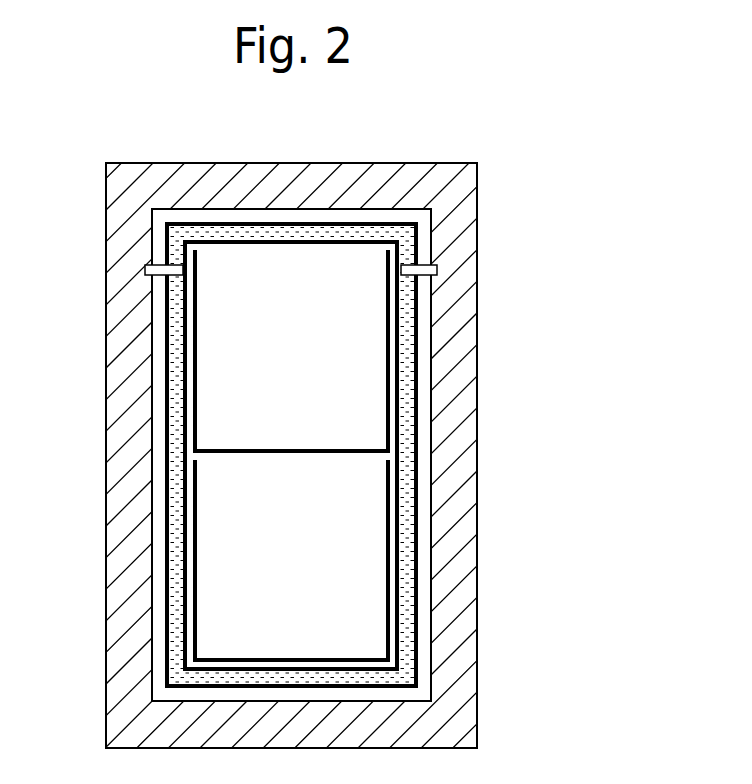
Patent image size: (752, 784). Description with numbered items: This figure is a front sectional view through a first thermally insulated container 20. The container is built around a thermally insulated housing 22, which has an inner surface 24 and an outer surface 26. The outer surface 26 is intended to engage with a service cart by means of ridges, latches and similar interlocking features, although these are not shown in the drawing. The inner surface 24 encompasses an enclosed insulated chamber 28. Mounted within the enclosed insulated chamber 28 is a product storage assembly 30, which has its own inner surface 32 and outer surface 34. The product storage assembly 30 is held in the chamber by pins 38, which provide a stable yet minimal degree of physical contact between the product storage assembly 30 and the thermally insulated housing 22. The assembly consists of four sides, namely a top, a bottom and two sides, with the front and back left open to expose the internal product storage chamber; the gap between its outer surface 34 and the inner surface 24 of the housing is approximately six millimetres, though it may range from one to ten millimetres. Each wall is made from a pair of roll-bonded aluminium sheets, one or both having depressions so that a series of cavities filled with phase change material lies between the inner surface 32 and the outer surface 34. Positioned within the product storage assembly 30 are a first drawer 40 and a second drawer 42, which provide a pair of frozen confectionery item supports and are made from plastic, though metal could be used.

The thermally insulated container 20 is at (574, 190).
The thermally insulated housing 22 is at (428, 723).
The inner surface 24 is at (432, 548).
The outer surface 26 is at (477, 495).
The enclosed insulated chamber 28 is at (343, 592).
The product storage assembly 30 is at (175, 624).
The inner surface 32 is at (178, 572).
The outer surface 34 is at (167, 515).
The pins 38 is at (162, 268).
The first drawer 40 is at (390, 375).
The second drawer 42 is at (390, 640).